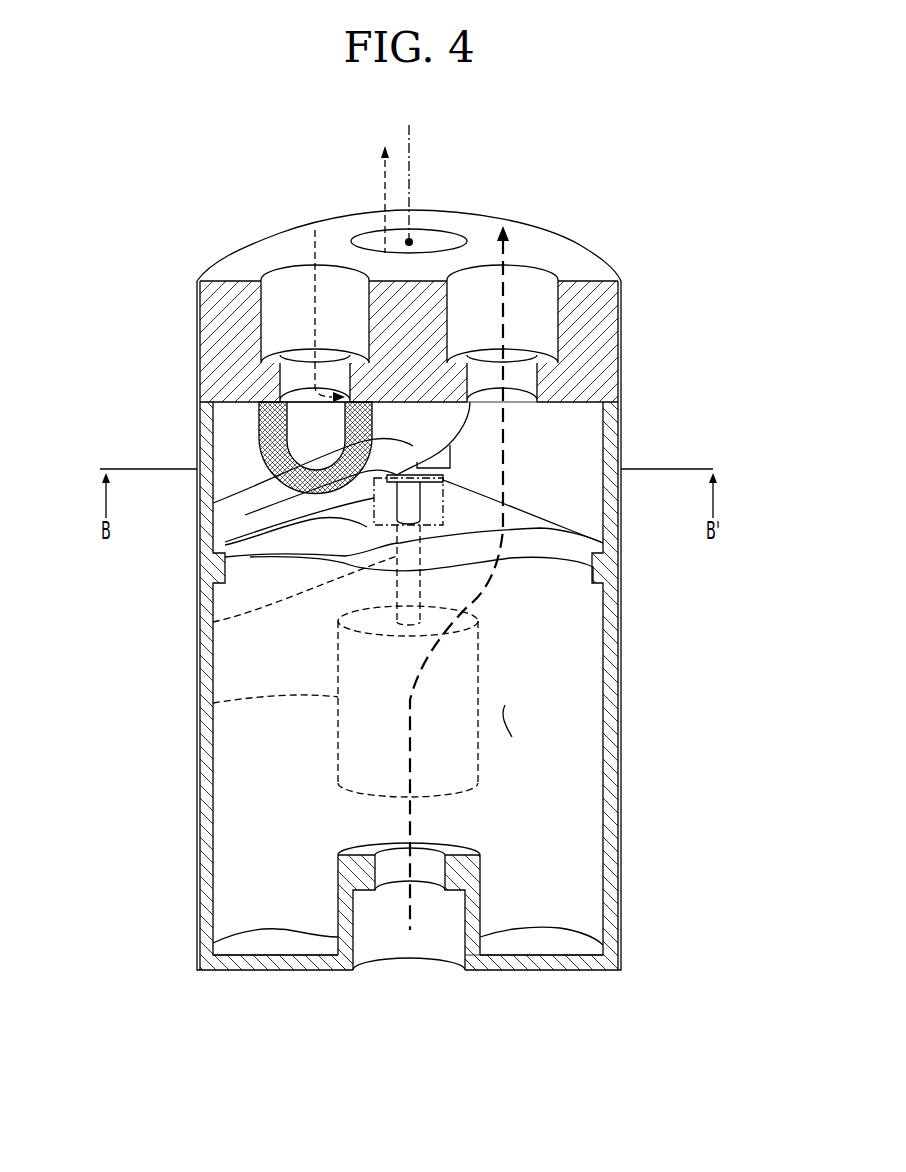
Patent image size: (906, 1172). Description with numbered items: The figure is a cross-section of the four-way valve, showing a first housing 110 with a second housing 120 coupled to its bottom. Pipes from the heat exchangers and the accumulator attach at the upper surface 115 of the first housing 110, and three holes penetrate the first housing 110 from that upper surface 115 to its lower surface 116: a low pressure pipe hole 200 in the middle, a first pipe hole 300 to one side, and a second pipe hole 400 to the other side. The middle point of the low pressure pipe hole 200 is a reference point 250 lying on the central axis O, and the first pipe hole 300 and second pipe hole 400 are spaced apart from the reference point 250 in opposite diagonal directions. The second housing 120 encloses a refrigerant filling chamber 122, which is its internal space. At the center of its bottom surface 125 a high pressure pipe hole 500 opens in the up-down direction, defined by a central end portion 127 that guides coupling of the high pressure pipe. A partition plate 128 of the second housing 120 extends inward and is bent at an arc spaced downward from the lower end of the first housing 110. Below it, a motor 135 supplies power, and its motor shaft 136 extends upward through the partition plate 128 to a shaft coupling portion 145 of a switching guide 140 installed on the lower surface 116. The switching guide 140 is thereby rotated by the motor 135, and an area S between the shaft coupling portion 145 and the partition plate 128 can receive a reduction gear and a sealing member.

The first housing 110 is at (454, 304).
The upper surface 115 is at (595, 268).
The lower surface 116 is at (565, 405).
The second housing 120 is at (612, 670).
The refrigerant filling chamber 122 is at (513, 716).
The bottom surface 125 is at (540, 965).
The central end portion 127 is at (345, 906).
The partition plate 128 is at (225, 542).
The motor 135 is at (213, 703).
The motor shaft 136 is at (213, 622).
The switching guide 140 is at (250, 446).
The shaft coupling portion 145 is at (213, 503).
The low pressure pipe hole 200 is at (373, 242).
The reference point 250 is at (412, 241).
The first pipe hole 300 is at (540, 290).
The second pipe hole 400 is at (300, 289).
The high pressure pipe hole 500 is at (420, 948).
The central axis O is at (408, 170).
The area S is at (443, 502).